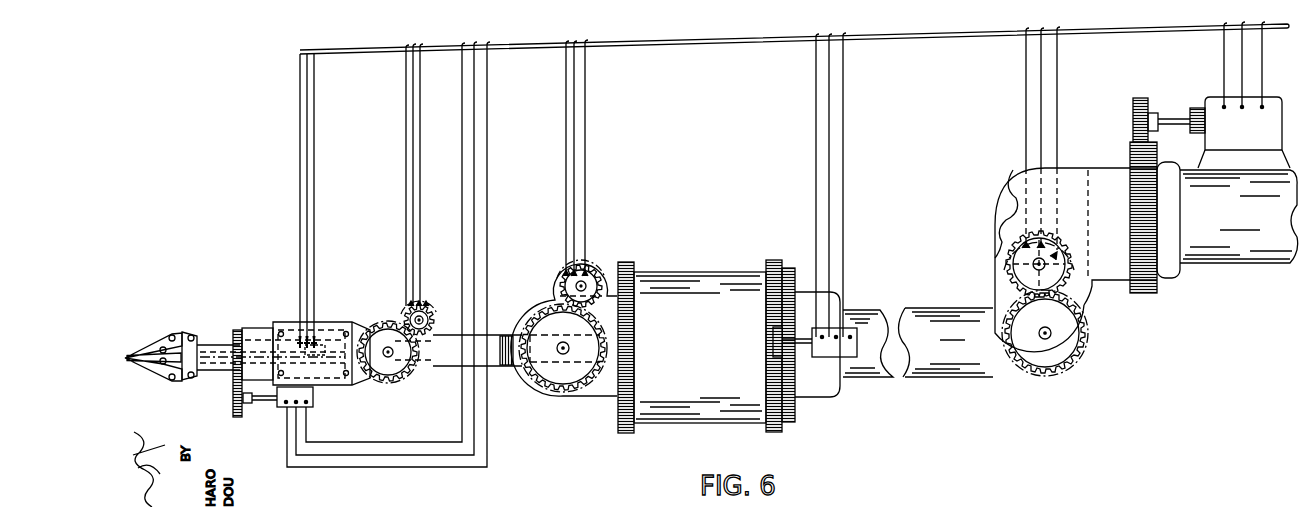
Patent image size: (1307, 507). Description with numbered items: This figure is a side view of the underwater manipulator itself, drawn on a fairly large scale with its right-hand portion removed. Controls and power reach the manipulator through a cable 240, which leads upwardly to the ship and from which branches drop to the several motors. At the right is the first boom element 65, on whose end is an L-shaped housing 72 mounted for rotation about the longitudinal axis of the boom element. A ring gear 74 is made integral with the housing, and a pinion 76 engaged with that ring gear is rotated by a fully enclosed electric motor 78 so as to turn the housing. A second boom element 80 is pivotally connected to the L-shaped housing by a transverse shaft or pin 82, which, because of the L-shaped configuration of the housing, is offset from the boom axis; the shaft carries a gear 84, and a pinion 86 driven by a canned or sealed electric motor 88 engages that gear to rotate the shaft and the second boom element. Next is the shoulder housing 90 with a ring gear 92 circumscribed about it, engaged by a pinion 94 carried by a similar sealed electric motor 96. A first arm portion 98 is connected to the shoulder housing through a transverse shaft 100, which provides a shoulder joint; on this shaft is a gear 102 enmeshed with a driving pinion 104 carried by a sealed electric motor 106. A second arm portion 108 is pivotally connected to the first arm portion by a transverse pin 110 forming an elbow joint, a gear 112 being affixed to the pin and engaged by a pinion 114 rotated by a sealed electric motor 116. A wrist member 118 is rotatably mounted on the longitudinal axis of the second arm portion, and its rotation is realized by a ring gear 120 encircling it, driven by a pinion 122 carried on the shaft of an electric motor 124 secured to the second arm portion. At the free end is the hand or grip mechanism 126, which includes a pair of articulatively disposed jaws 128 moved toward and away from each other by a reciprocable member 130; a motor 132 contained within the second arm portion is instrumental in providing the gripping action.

The cable 240 is at (772, 34).
The first boom element 65 is at (1215, 238).
The L-shaped housing 72 is at (1090, 168).
The ring gear 74 is at (1150, 294).
The pinion 76 is at (1134, 112).
The electric motor 78 is at (1212, 108).
The second boom element 80 is at (953, 348).
The shaft 82 is at (1049, 337).
The gear 84 is at (1084, 298).
The pinion 86 is at (1008, 284).
The electric motor 88 is at (1022, 244).
The shoulder housing 90 is at (693, 302).
The ring gear 92 is at (776, 259).
The pinion 94 is at (772, 364).
The electric motor 96 is at (834, 358).
The first arm portion 98 is at (503, 366).
The transverse shaft 100 is at (563, 354).
The gear 102 is at (606, 337).
The driving pinion 104 is at (556, 300).
The electric motor 106 is at (598, 275).
The second arm portion 108 is at (290, 321).
The transverse pin 110 is at (387, 358).
The gear 112 is at (423, 365).
The pinion 114 is at (438, 340).
The electric motor 116 is at (432, 305).
The wrist member 118 is at (258, 327).
The ring gear 120 is at (232, 376).
The pinion 122 is at (243, 406).
The electric motor 124 is at (313, 399).
The hand or grip mechanism 126 is at (192, 331).
The jaws 128 is at (170, 334).
The reciprocable member 130 is at (214, 348).
The motor 132 is at (320, 345).